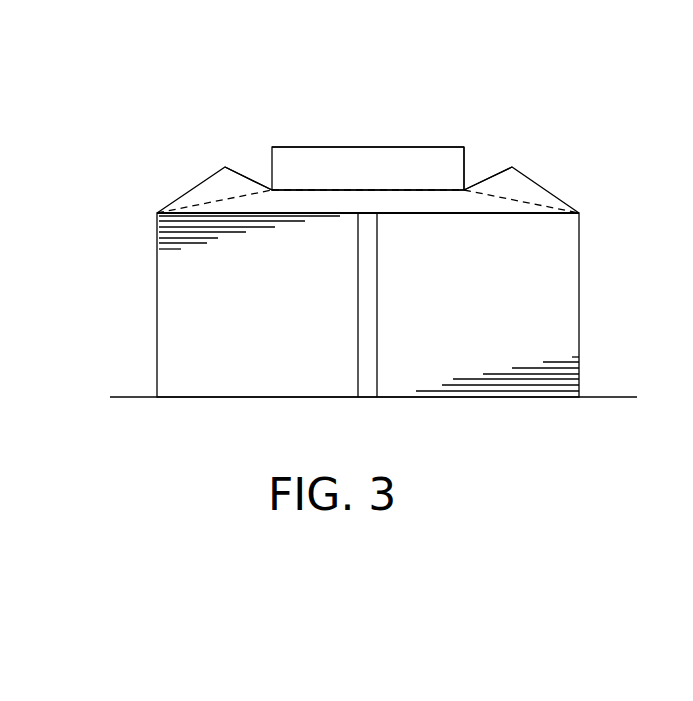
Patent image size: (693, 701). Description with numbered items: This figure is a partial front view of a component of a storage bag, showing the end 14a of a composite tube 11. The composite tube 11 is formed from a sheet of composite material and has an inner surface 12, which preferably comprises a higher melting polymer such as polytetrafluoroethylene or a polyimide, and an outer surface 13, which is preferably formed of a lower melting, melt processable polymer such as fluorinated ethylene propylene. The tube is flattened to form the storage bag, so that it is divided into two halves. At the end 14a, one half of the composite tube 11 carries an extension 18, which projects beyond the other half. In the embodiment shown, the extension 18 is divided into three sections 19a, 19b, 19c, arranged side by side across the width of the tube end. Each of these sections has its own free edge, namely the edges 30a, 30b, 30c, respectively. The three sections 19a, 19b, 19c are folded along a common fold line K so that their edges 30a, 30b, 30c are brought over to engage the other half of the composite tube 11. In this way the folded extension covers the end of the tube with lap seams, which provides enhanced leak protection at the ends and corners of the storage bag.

The composite tube 11 is at (555, 300).
The inner surface 12 is at (200, 213).
The outer surface 13 is at (195, 307).
The end 14a is at (618, 181).
The extension 18 is at (328, 188).
The fold line K is at (385, 188).
The first section 19a is at (223, 178).
The second section 19b is at (422, 157).
The third section 19c is at (513, 180).
The edge 30a is at (198, 185).
The edge 30b is at (355, 162).
The edge 30c is at (535, 178).